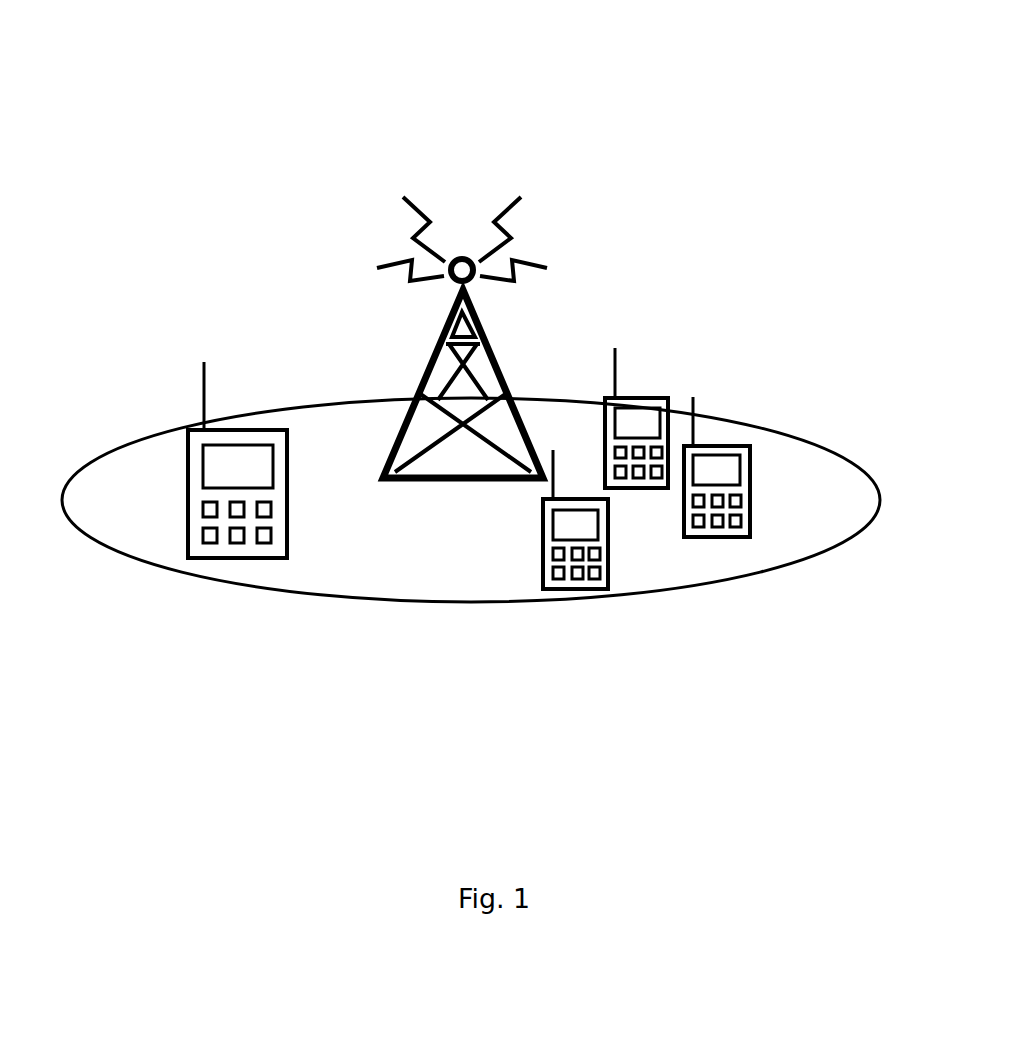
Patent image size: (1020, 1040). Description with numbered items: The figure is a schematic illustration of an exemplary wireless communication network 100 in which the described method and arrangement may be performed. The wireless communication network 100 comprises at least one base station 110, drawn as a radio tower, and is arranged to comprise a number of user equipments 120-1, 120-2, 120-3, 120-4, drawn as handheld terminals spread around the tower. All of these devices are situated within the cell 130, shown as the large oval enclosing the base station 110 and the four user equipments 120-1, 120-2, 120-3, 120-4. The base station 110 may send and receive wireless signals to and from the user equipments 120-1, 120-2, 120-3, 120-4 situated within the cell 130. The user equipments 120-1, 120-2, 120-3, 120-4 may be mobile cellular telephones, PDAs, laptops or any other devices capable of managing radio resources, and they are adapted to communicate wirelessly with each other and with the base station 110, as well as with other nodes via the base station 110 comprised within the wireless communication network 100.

The wireless communication network 100 is at (838, 93).
The base station 110 is at (483, 323).
The user equipment 120-1 is at (187, 470).
The user equipment 120-2 is at (650, 397).
The user equipment 120-3 is at (542, 563).
The user equipment 120-4 is at (749, 505).
The cell 130 is at (367, 562).